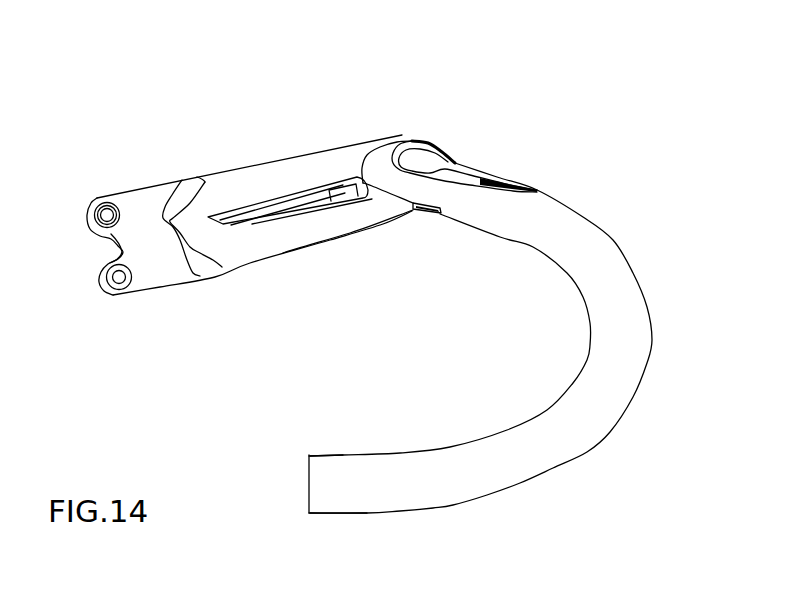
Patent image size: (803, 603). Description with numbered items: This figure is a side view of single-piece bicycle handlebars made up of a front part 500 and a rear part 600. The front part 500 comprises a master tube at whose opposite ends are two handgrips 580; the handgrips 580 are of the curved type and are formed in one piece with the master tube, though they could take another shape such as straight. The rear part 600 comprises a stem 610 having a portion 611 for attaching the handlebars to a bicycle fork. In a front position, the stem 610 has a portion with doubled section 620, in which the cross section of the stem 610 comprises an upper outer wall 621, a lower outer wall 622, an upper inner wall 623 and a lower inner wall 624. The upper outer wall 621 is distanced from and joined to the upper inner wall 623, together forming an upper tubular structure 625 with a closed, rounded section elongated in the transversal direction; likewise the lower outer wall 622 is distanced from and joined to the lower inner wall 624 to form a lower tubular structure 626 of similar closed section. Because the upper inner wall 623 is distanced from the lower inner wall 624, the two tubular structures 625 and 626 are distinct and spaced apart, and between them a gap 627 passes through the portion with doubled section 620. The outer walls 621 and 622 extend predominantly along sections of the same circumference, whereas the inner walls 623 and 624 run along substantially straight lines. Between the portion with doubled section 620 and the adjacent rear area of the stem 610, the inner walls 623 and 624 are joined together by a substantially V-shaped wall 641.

The front part 500 is at (618, 212).
The handgrips 580 is at (385, 482).
The rear part 600 is at (210, 335).
The stem 610 is at (218, 193).
The portion for attaching to a bicycle fork 611 is at (145, 263).
The portion with doubled section 620 is at (309, 95).
The upper outer wall 621 is at (307, 172).
The lower outer wall 622 is at (353, 233).
The upper inner wall 623 is at (401, 137).
The lower inner wall 624 is at (344, 205).
The upper tubular structure 625 is at (343, 148).
The lower tubular structure 626 is at (407, 214).
The gap 627 is at (335, 197).
The V-shaped wall 641 is at (251, 202).